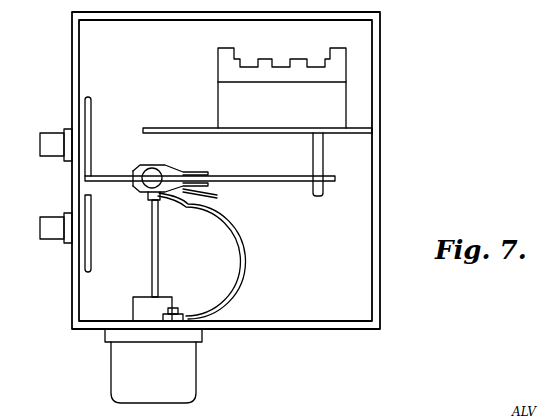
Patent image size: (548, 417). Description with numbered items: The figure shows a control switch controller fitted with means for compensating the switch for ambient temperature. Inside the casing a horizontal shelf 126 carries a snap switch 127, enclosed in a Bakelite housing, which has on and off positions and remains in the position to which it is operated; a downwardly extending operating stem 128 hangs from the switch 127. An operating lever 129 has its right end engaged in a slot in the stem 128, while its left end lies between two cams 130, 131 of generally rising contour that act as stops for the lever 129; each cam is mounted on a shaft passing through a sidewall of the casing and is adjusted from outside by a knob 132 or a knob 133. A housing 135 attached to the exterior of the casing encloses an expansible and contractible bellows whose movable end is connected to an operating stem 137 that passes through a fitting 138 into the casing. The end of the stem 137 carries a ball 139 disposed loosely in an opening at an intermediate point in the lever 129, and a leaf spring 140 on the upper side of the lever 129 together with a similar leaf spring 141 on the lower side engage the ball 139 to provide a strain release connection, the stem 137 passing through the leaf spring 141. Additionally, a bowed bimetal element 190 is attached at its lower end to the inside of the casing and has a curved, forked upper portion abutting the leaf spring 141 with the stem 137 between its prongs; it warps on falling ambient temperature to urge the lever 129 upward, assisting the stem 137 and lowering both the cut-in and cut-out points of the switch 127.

The horizontal shelf 126 is at (178, 128).
The snap switch 127 is at (293, 107).
The operating stem 128 is at (323, 157).
The operating lever 129 is at (267, 176).
The cam 130 is at (91, 111).
The cam 131 is at (91, 255).
The knob 132 is at (49, 133).
The knob 133 is at (50, 213).
The housing 135 is at (172, 375).
The operating stem 137 is at (158, 247).
The fitting 138 is at (133, 299).
The ball 139 is at (148, 194).
The leaf spring 140 is at (162, 167).
The leaf spring 141 is at (204, 196).
The bowed bimetal element 190 is at (235, 247).